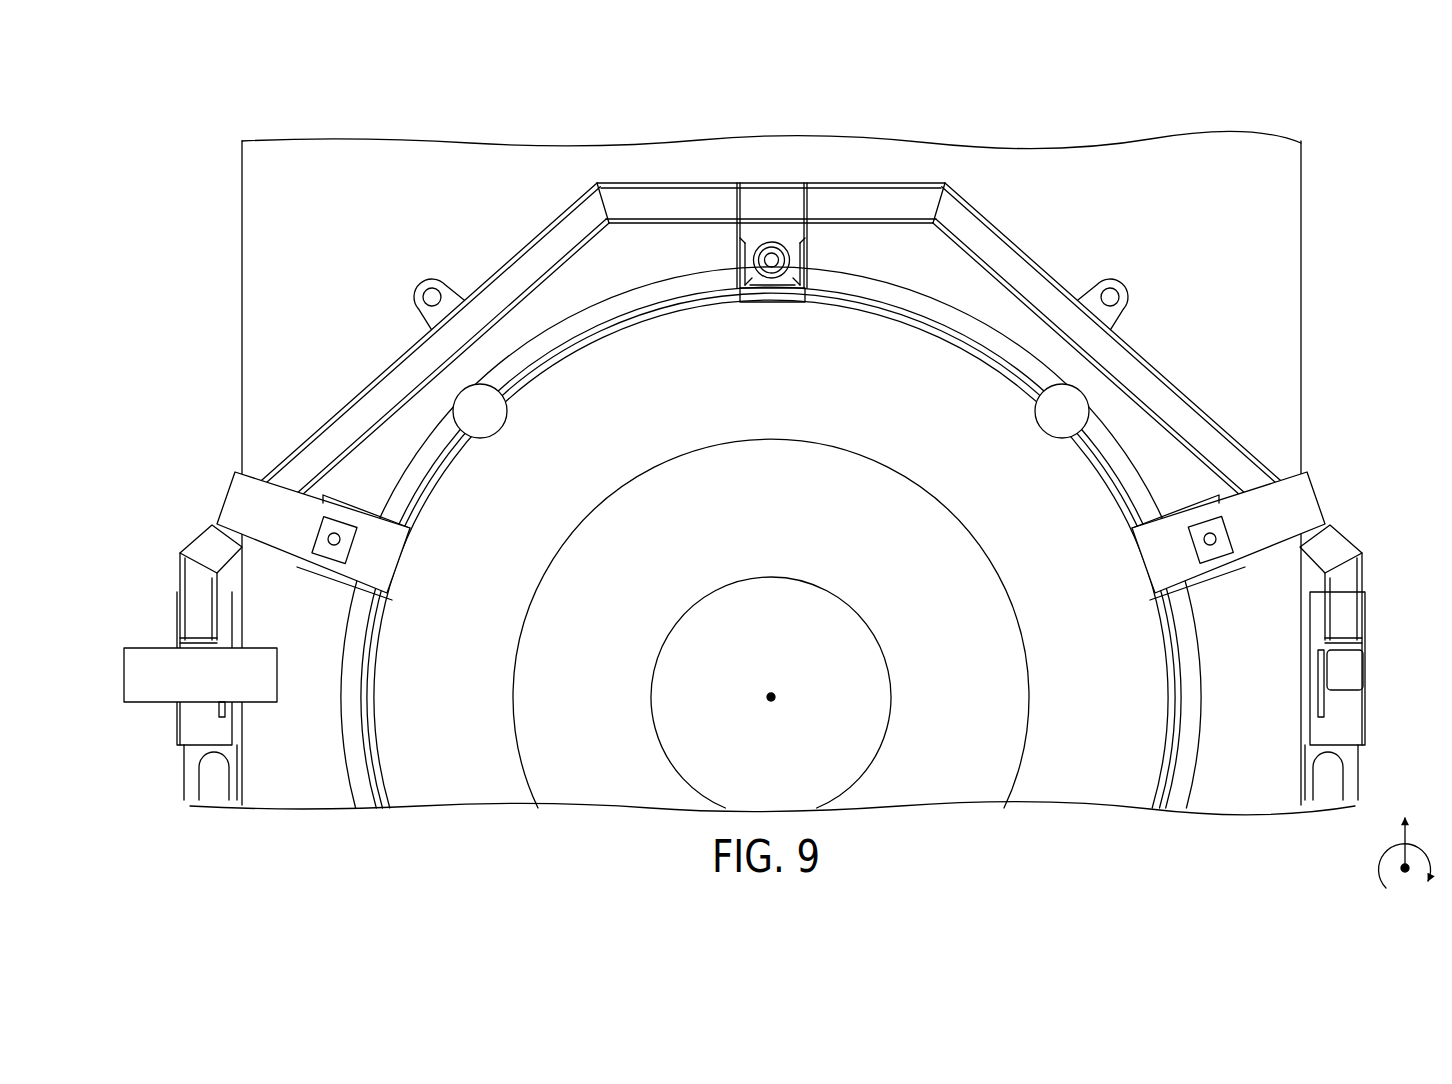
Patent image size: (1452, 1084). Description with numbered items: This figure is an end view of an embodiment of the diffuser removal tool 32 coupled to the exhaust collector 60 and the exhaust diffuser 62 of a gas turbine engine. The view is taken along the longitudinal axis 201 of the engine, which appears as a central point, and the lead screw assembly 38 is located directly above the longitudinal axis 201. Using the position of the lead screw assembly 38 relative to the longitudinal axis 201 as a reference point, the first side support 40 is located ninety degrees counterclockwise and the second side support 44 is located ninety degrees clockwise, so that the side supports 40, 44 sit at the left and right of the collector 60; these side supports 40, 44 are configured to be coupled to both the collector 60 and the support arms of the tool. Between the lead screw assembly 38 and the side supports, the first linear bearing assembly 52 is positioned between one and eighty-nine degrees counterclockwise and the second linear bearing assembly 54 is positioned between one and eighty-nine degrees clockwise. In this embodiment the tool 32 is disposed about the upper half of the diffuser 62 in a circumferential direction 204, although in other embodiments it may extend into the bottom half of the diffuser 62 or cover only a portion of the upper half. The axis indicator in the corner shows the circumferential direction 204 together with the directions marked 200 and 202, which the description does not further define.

The diffuser removal tool 32 is at (1268, 323).
The lead screw assembly 38 is at (815, 162).
The first side support 40 is at (155, 702).
The second side support 44 is at (1368, 671).
The first linear bearing assembly 52 is at (220, 478).
The second linear bearing assembly 54 is at (1340, 499).
The exhaust collector 60 is at (1276, 163).
The exhaust diffuser 62 is at (1120, 452).
The axis origin 200 is at (1401, 863).
The longitudinal axis 201 is at (775, 700).
The vertical axis 202 is at (1411, 838).
The circumferential direction 204 is at (1384, 869).